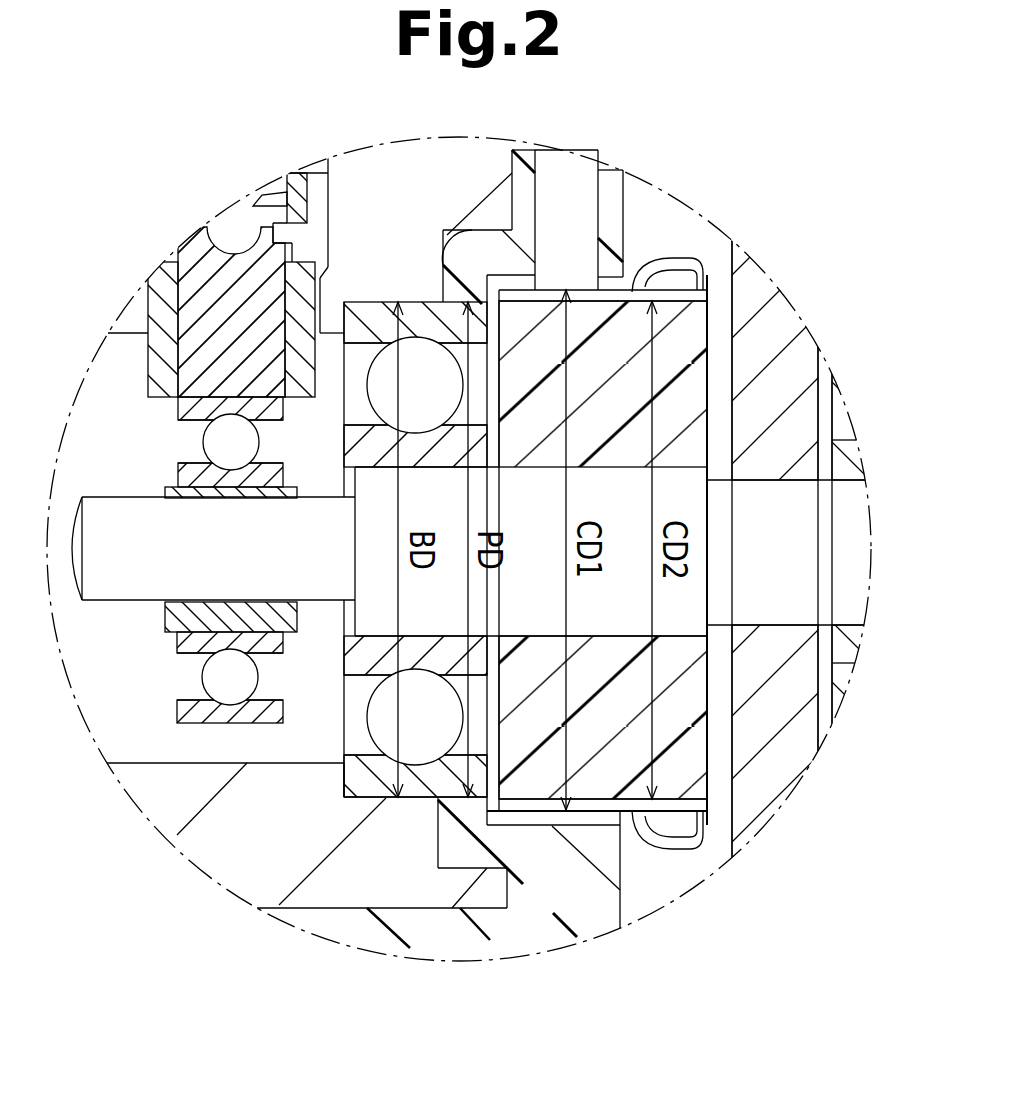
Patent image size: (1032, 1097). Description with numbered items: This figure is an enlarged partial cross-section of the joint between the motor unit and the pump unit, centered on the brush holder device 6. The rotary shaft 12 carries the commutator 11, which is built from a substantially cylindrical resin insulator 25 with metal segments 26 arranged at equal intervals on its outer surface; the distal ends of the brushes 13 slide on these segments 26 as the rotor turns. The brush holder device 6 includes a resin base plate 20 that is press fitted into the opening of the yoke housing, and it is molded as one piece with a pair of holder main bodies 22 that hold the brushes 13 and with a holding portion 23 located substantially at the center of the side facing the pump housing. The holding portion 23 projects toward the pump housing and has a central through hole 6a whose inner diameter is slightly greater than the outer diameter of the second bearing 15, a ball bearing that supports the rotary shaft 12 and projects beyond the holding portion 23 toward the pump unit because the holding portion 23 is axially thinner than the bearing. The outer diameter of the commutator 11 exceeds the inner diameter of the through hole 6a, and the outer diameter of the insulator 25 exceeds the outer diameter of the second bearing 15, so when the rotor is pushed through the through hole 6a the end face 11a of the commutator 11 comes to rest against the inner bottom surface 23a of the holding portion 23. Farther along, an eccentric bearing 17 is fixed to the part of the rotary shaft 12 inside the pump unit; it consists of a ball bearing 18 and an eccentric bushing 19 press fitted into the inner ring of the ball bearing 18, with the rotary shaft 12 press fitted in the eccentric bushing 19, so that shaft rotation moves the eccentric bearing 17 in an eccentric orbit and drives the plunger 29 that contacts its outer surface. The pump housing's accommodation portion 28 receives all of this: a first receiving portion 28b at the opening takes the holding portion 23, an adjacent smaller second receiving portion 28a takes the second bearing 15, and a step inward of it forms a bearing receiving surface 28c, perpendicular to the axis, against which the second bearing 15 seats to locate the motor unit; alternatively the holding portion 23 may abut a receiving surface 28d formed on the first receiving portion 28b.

The brush holder device 6 is at (495, 131).
The through hole 6a is at (440, 800).
The commutator 11 is at (817, 207).
The end face 11a is at (533, 795).
The rotary shaft 12 is at (858, 506).
The brushes 13 is at (603, 180).
The second bearing 15 is at (344, 655).
The eccentric bearing 17 is at (118, 700).
The ball bearing 18 is at (165, 618).
The eccentric bushing 19 is at (178, 710).
The base plate 20 is at (512, 178).
The holder main bodies 22 is at (640, 196).
The holding portion 23 is at (478, 230).
The inner bottom surface 23a is at (500, 846).
The insulator 25 is at (710, 318).
The segments 26 is at (736, 244).
The accommodation portion 28 is at (112, 760).
The second receiving portion 28a is at (342, 797).
The first receiving portion 28b is at (478, 862).
The bearing receiving surface 28c is at (344, 752).
The receiving surface 28d is at (437, 858).
The plunger 29 is at (190, 307).